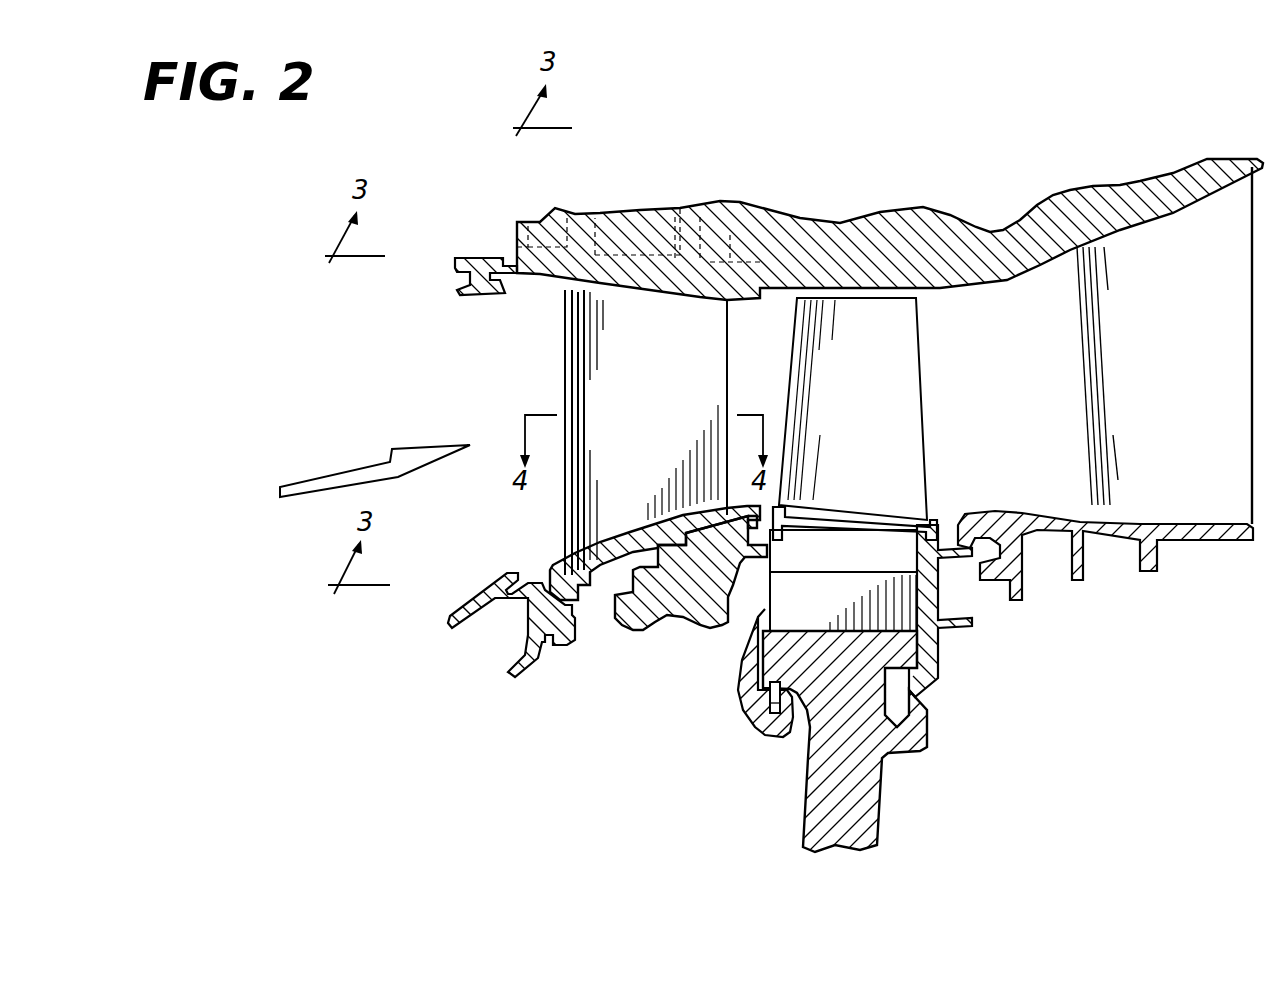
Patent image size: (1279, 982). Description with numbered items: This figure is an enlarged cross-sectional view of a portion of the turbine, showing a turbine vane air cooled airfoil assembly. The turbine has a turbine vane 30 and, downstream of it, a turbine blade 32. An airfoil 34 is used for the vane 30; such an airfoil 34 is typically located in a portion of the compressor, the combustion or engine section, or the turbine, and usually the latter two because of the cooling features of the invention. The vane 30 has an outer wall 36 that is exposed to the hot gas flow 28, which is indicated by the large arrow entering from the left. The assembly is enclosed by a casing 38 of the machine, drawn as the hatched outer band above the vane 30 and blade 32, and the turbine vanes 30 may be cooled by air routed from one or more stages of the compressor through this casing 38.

The hot gas flow 28 is at (340, 473).
The turbine vane 30 is at (556, 552).
The turbine blade 32 is at (942, 516).
The airfoil 34 is at (665, 356).
The outer wall 36 is at (565, 320).
The casing 38 is at (623, 210).